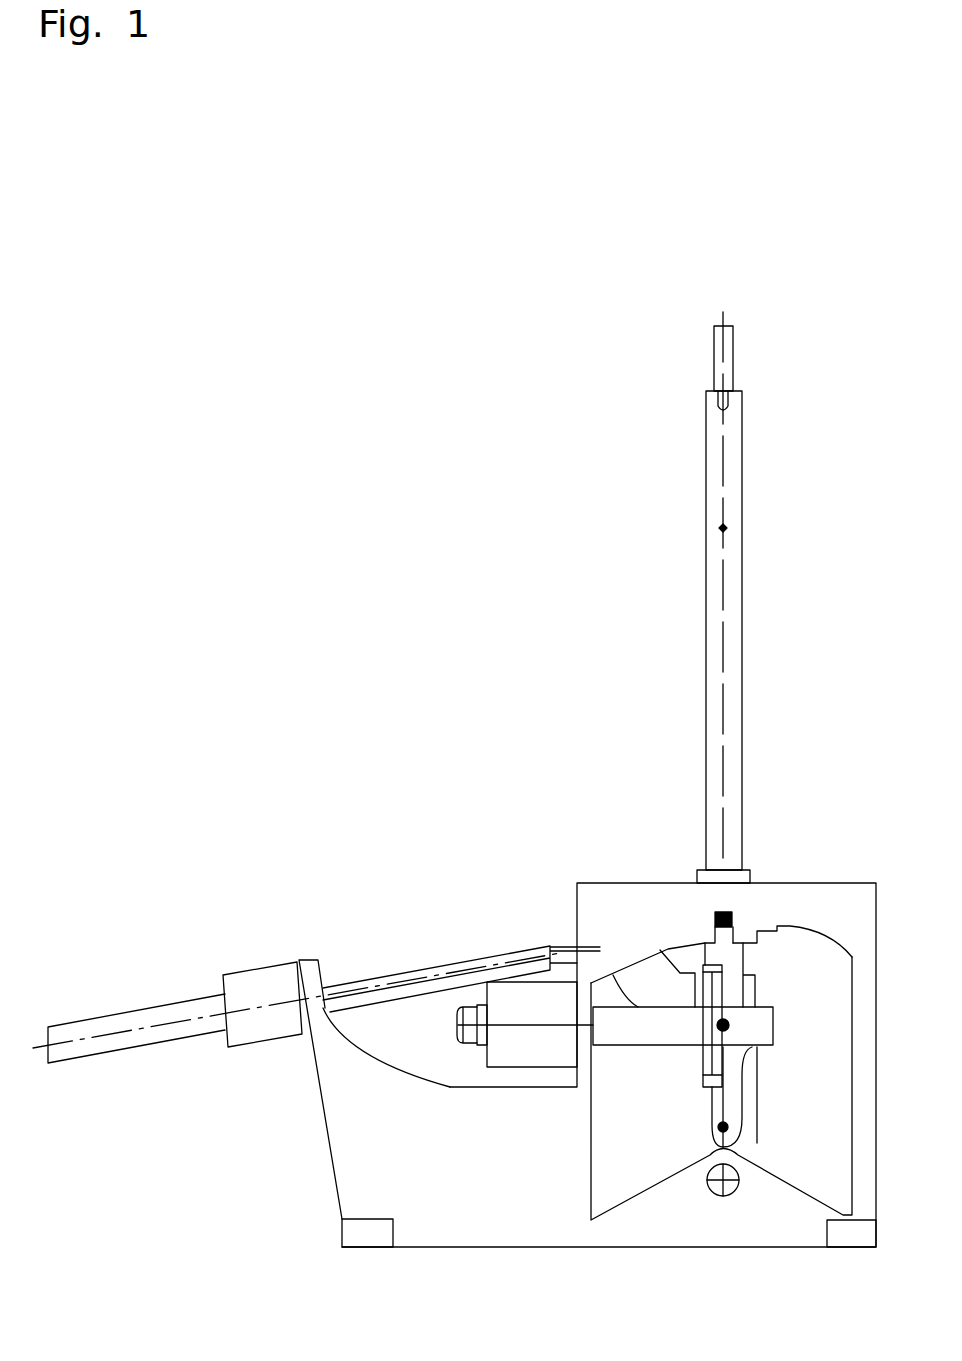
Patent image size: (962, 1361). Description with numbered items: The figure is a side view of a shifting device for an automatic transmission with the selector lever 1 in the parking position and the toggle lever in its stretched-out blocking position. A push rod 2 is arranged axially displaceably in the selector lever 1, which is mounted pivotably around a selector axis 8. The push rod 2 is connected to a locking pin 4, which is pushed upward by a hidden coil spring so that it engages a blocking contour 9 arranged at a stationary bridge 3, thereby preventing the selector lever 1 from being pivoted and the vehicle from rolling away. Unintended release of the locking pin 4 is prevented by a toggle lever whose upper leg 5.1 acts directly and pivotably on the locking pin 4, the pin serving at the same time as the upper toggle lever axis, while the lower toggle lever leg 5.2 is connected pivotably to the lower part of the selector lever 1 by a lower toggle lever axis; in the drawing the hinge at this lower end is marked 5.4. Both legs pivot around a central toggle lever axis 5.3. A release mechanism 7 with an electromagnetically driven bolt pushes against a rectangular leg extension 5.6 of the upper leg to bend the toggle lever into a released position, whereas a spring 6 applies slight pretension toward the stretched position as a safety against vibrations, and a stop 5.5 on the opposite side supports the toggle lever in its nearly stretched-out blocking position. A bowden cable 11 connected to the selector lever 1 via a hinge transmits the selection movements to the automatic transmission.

The selector lever 1 is at (706, 479).
The push rod 2 is at (734, 337).
The stationary bridge 3 is at (803, 893).
The locking pin 4 is at (722, 912).
The upper leg 5.1 is at (705, 957).
The lower toggle lever leg 5.2 is at (737, 1098).
The central toggle lever axis 5.3 is at (731, 1022).
The lower pivot pin 5.4 is at (717, 1132).
The stop 5.5 is at (760, 1000).
The rectangular leg extension 5.6 is at (644, 1043).
The spring 6 is at (712, 1062).
The release mechanism 7 is at (527, 1064).
The selector axis 8 is at (723, 1197).
The blocking contour 9 is at (733, 927).
The bowden cable 11 is at (460, 960).